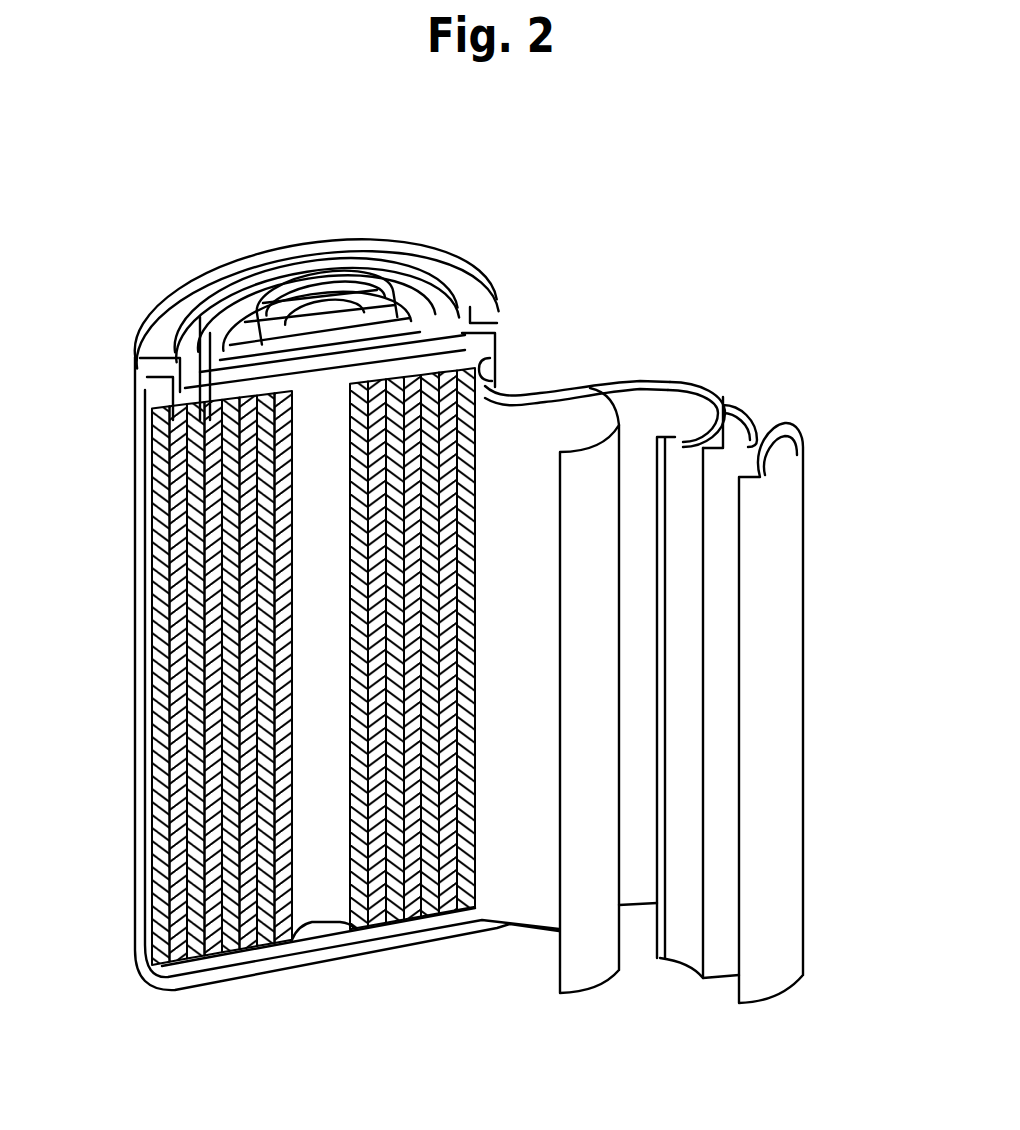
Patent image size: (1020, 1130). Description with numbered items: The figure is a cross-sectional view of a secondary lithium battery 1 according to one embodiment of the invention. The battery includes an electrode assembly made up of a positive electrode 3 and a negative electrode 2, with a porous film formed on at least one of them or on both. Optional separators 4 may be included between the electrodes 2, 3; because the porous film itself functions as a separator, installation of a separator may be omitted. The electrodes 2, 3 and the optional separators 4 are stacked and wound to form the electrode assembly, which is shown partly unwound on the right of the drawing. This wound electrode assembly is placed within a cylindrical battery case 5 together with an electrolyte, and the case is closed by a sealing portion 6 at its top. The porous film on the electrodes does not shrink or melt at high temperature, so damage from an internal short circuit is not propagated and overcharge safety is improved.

The secondary lithium battery 1 is at (763, 352).
The negative electrode 2 is at (793, 560).
The positive electrode 3 is at (681, 447).
The separator 4 is at (777, 433).
The cylindrical battery case 5 is at (135, 903).
The sealing portion 6 is at (335, 283).